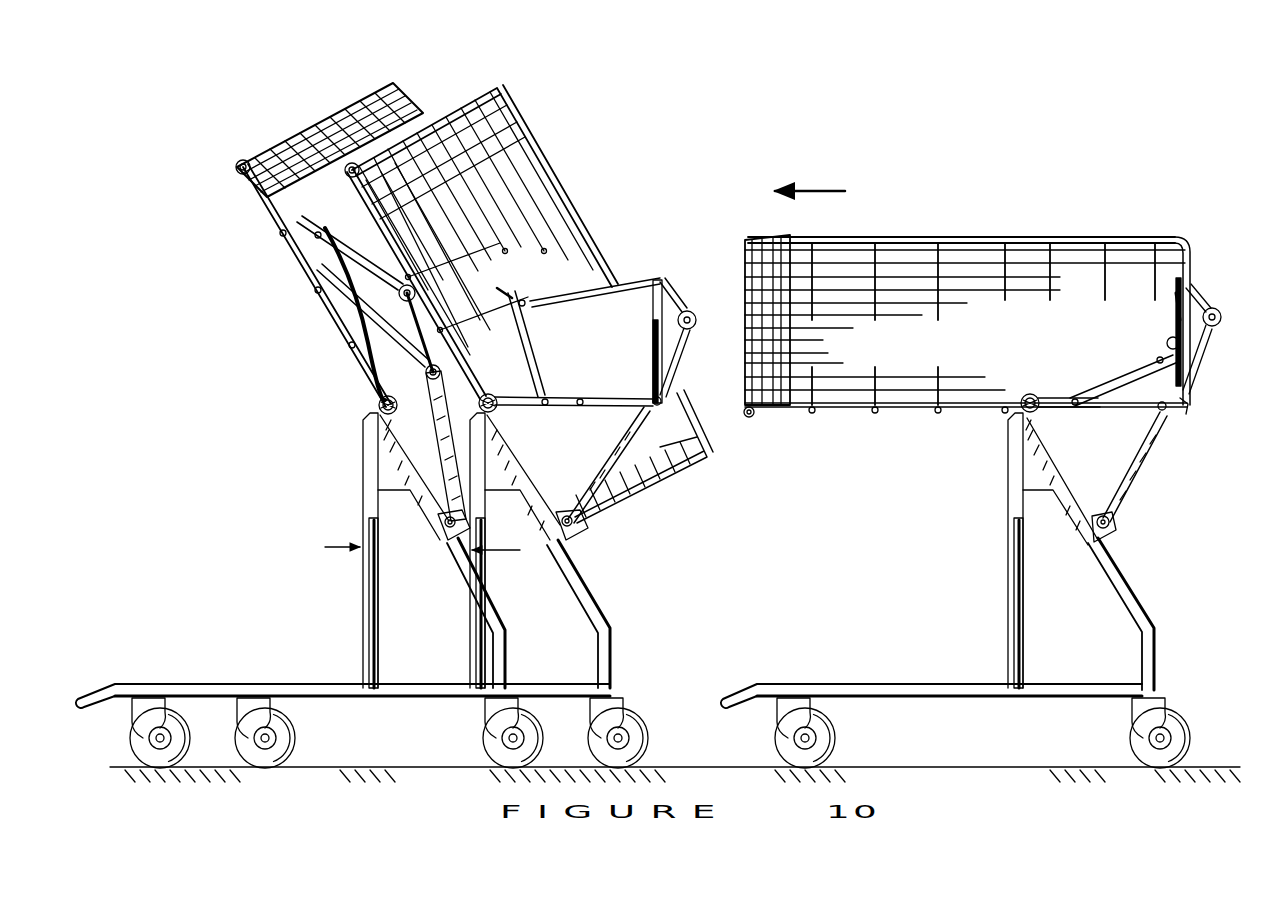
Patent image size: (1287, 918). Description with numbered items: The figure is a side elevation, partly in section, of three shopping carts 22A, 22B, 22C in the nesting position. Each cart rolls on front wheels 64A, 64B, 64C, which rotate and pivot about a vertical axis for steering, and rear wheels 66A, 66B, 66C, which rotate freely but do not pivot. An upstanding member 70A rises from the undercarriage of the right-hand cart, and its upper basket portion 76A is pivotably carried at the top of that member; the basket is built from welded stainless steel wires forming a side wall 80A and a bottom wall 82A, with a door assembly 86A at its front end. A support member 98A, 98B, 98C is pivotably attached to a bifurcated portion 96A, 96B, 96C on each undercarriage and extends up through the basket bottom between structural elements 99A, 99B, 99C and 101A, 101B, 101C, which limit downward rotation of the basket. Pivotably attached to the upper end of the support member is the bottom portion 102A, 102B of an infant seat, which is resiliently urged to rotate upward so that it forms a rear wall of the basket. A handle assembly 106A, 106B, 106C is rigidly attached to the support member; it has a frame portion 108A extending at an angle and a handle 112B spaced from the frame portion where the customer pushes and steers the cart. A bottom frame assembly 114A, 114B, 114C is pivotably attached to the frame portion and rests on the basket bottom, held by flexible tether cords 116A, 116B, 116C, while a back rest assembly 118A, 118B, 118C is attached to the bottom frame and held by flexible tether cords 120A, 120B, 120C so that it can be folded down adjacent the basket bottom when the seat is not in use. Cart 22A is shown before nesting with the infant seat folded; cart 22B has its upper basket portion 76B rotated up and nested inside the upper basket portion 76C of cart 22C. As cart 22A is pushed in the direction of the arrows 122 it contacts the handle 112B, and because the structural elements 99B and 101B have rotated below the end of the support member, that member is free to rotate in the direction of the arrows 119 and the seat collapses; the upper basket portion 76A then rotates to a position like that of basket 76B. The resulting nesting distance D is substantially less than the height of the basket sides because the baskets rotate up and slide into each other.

The cart 22A is at (1078, 218).
The cart 22B is at (443, 98).
The cart 22C is at (343, 98).
The upper basket portion 76A is at (850, 240).
The upper basket portion 76B is at (560, 178).
The upper basket portion 76C is at (272, 143).
The side wall 80A is at (945, 262).
The bottom wall 82A is at (872, 414).
The door assembly 86A is at (740, 240).
The arrows 122 is at (818, 190).
The flexible tether cords 120A is at (1178, 340).
The flexible tether cords 120B is at (640, 287).
The flexible tether cords 120C is at (305, 266).
The frame portion 108A is at (1192, 280).
The handle assembly 106A is at (1212, 306).
The handle assembly 106B is at (702, 308).
The handle assembly 106C is at (390, 283).
The bottom frame assembly 114A is at (1030, 397).
The bottom frame assembly 114B is at (520, 370).
The bottom frame assembly 114C is at (352, 293).
The back rest assembly 118A is at (1142, 372).
The back rest assembly 118B is at (560, 338).
The back rest assembly 118C is at (297, 226).
The flexible tether cords 116A is at (1072, 410).
The flexible tether cords 116B is at (620, 460).
The flexible tether cords 116C is at (366, 346).
The structural element 101A is at (1192, 410).
The structural element 101B is at (560, 558).
The structural element 101C is at (455, 556).
The structural element 99A is at (1170, 411).
The structural element 99B is at (555, 522).
The structural element 99C is at (440, 524).
The bottom portion of infant seat 102A is at (1165, 400).
The bottom portion of infant seat 102B is at (652, 342).
The support member 98A is at (1140, 474).
The support member 98B is at (606, 466).
The support member 98C is at (433, 420).
The bifurcated portion 96A is at (1112, 534).
The bifurcated portion 96B is at (575, 538).
The bifurcated portion 96C is at (442, 540).
The upstanding member 70A is at (1013, 478).
The front wheel 64A is at (838, 738).
The front wheel 64B is at (298, 740).
The front wheel 64C is at (128, 740).
The rear wheel 66A is at (1126, 744).
The rear wheel 66B is at (630, 712).
The rear wheel 66C is at (482, 740).
The handle 112B is at (672, 292).
The arrows 119 is at (598, 478).
The nesting distance D is at (331, 552).